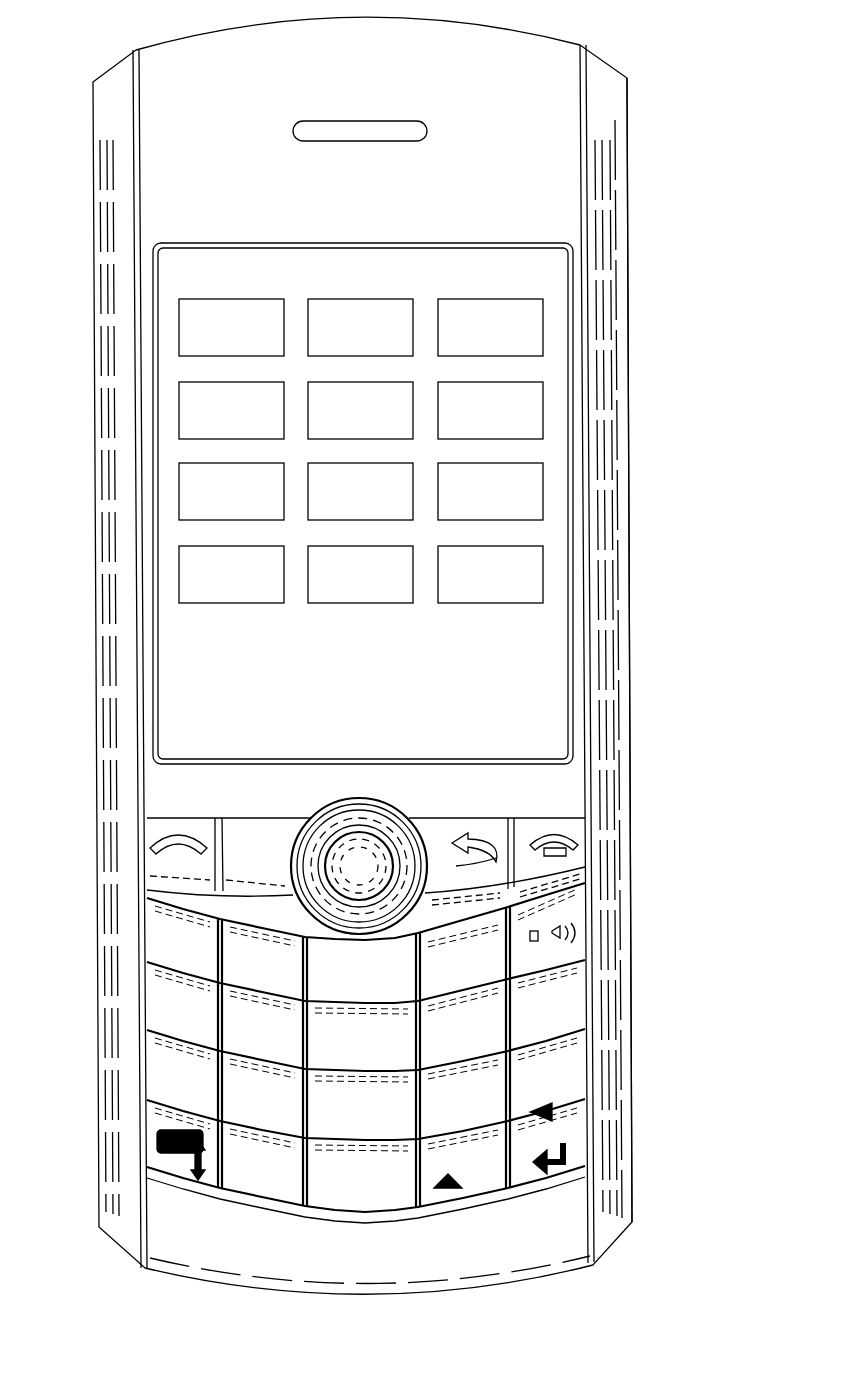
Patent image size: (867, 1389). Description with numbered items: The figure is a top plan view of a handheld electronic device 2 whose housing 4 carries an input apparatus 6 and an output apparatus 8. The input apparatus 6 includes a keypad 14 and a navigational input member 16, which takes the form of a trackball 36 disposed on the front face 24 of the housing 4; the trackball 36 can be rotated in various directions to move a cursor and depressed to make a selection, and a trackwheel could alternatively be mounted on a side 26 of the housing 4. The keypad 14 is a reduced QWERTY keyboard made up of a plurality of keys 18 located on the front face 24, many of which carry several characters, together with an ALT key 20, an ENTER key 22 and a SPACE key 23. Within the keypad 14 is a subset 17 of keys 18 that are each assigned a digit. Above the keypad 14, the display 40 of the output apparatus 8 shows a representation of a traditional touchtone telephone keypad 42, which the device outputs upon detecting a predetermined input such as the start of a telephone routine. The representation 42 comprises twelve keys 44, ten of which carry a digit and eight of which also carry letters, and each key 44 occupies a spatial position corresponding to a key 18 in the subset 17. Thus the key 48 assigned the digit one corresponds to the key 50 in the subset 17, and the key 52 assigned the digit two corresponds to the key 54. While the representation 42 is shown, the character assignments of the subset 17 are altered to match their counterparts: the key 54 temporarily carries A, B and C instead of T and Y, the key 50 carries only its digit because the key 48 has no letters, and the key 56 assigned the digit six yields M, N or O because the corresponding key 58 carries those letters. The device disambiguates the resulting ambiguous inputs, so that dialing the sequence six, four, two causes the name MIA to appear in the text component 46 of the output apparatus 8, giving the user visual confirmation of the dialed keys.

The handheld electronic device 2 is at (660, 78).
The housing 4 is at (634, 912).
The input apparatus 6 is at (268, 815).
The output apparatus 8 is at (545, 625).
The keypad 14 is at (596, 1001).
The navigational input member 16 is at (377, 840).
The subset 17 is at (316, 1208).
The keys 18 is at (150, 1075).
The ALT key 20 is at (160, 1175).
The ENTER key 22 is at (585, 1110).
The SPACE key 23 is at (415, 1205).
The front face 24 is at (575, 790).
The side 26 is at (634, 410).
The trackball 36 is at (345, 840).
The display 40 is at (555, 665).
The representation of a traditional touchtone telephone keypad 42 is at (583, 357).
The keys 44 is at (300, 352).
The text component 46 is at (404, 702).
The key 48 is at (215, 299).
The key 50 is at (238, 940).
The key 52 is at (342, 298).
The key 54 is at (325, 982).
The key 56 is at (430, 992).
The key 58 is at (465, 439).